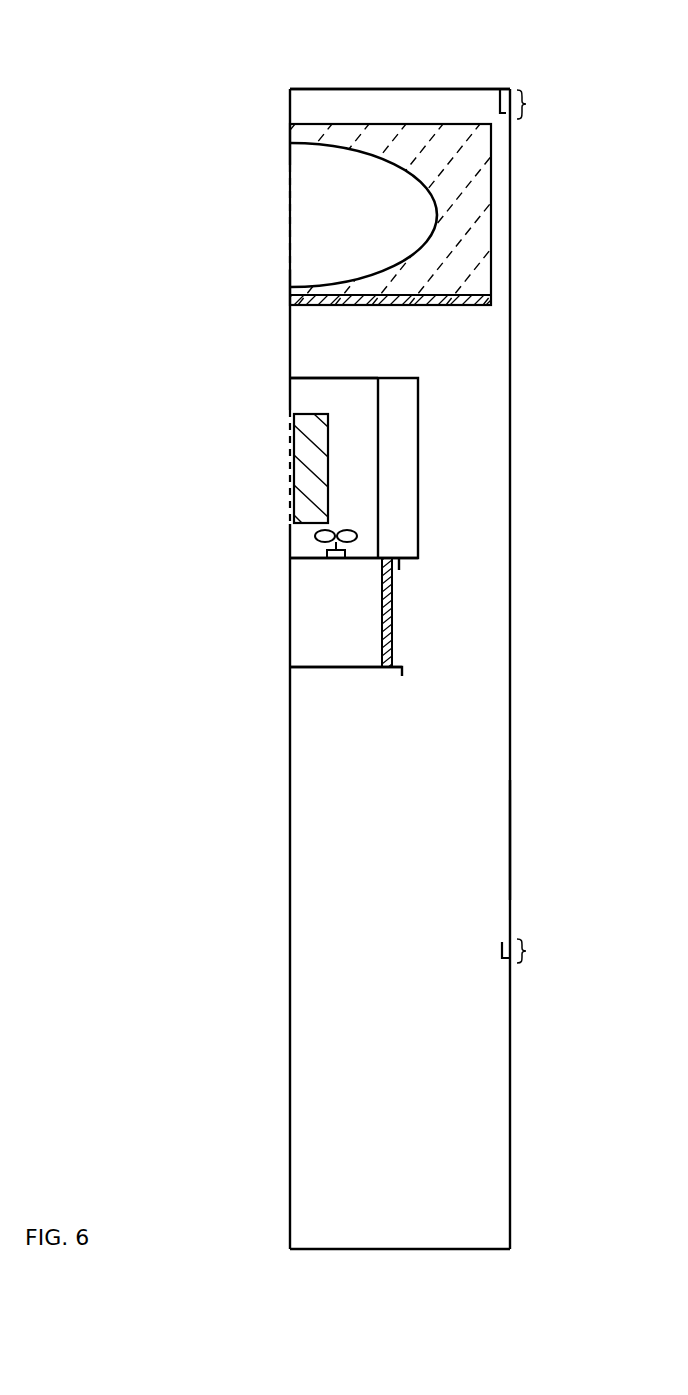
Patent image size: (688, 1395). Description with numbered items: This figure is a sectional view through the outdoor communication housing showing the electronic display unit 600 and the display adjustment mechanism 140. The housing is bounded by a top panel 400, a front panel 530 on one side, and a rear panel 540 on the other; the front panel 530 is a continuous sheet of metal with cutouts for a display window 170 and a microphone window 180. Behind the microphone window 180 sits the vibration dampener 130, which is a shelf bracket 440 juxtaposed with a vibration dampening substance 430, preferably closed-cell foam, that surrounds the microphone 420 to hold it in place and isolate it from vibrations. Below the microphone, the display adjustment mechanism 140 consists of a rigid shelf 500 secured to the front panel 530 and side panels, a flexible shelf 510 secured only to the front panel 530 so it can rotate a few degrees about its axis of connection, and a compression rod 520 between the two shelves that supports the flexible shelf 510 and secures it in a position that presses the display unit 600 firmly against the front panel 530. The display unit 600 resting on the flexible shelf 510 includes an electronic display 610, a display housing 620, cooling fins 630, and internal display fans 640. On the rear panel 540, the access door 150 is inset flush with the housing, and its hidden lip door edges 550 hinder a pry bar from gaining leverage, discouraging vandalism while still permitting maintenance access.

The vibration dampener 130 is at (396, 100).
The display adjustment mechanism 140 is at (363, 688).
The access door 150 is at (510, 830).
The display window 170 is at (290, 421).
The microphone window 180 is at (289, 167).
The top panel 400 is at (275, 89).
The microphone 420 is at (437, 213).
The vibration dampening substance 430 is at (466, 156).
The shelf bracket 440 is at (348, 298).
The rigid shelf 500 is at (330, 665).
The flexible shelf 510 is at (305, 563).
The compression rod 520 is at (391, 617).
The front panel 530 is at (290, 75).
The rear panel 540 is at (510, 75).
The hidden lip door edges 550 is at (545, 96).
The electronic display unit 600 is at (446, 447).
The electronic display 610 is at (308, 450).
The display housing 620 is at (342, 390).
The cooling fins 630 is at (398, 388).
The internal display fans 640 is at (318, 540).